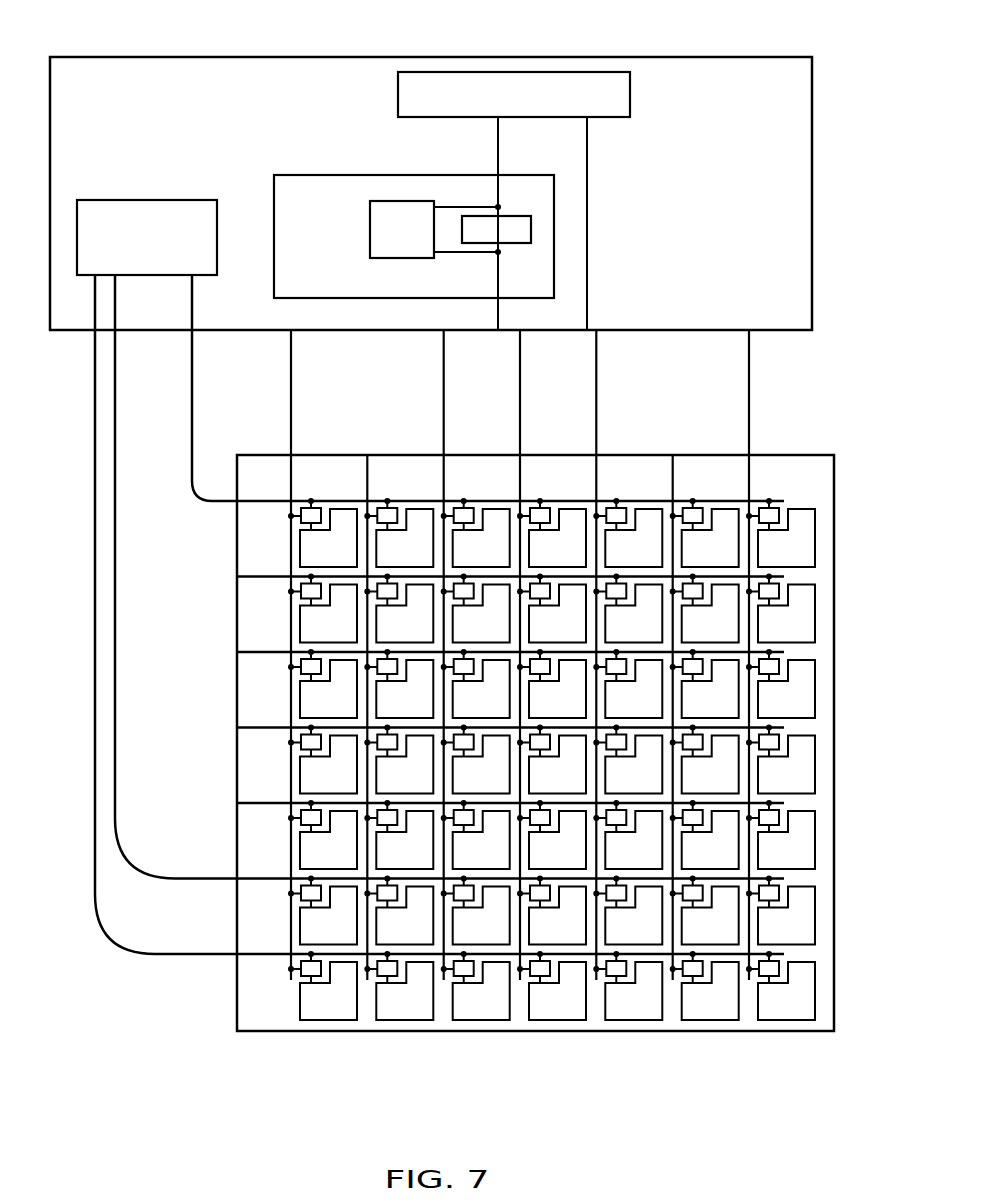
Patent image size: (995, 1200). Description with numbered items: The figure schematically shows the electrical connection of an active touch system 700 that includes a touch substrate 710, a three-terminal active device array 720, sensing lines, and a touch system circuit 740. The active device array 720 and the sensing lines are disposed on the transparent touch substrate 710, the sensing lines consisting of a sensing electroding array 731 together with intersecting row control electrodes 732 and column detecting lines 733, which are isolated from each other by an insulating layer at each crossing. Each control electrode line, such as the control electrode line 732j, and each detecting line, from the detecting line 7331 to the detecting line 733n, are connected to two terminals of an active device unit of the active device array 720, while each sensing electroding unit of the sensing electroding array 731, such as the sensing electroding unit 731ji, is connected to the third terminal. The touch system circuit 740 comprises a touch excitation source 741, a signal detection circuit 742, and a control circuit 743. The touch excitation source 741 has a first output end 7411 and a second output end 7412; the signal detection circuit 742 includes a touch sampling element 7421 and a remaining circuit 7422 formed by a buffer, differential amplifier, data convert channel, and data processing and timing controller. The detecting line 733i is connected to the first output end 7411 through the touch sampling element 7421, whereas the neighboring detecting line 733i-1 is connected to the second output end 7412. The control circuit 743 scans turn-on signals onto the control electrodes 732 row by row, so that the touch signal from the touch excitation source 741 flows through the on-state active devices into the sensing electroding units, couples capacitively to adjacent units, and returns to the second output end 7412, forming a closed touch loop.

The active touch system 700 is at (442, 519).
The touch substrate 710 is at (237, 1031).
The active device array 720 is at (296, 975).
The sensing electroding array 731 is at (327, 1019).
The sensing electroding unit 731ji is at (556, 790).
The row control electrodes 732 is at (168, 750).
The control electrode line 732j is at (478, 727).
The column detecting lines 733 is at (713, 410).
The detecting line 7331 is at (262, 655).
The detecting line 733i-1 is at (401, 655).
The detecting line 733i is at (491, 655).
The detecting line 733n is at (777, 655).
The touch system circuit 740 is at (431, 193).
The touch excitation source 741 is at (514, 94).
The first output end 7411 is at (467, 223).
The second output end 7412 is at (559, 223).
The signal detection circuit 742 is at (414, 236).
The touch sampling element 7421 is at (496, 231).
The remaining circuit 7422 is at (402, 229).
The control circuit 743 is at (147, 237).